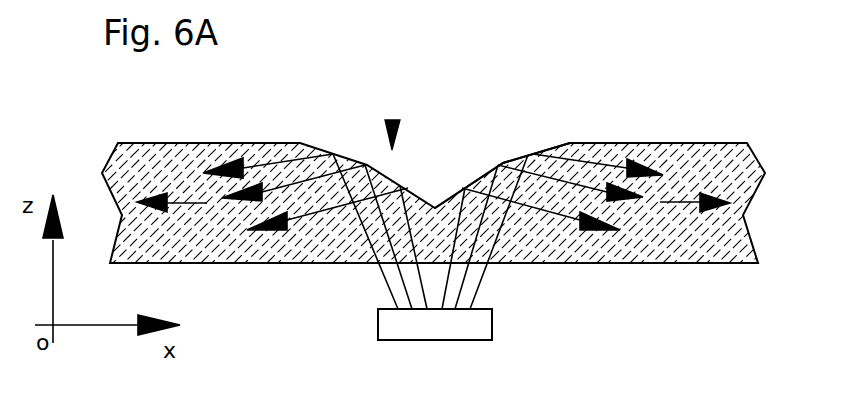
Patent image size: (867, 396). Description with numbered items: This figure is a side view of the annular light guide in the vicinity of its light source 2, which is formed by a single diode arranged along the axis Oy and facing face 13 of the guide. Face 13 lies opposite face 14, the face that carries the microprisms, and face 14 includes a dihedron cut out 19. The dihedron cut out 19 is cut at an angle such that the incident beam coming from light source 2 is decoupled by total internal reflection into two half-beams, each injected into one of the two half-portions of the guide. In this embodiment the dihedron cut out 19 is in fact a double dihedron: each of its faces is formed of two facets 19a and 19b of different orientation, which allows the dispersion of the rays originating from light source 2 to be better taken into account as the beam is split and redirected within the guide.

The face 14 is at (255, 143).
The face 13 is at (278, 265).
The dihedron cut out 19 is at (392, 120).
The facet 19a is at (466, 189).
The facet 19b is at (528, 156).
The light source 2 is at (480, 323).